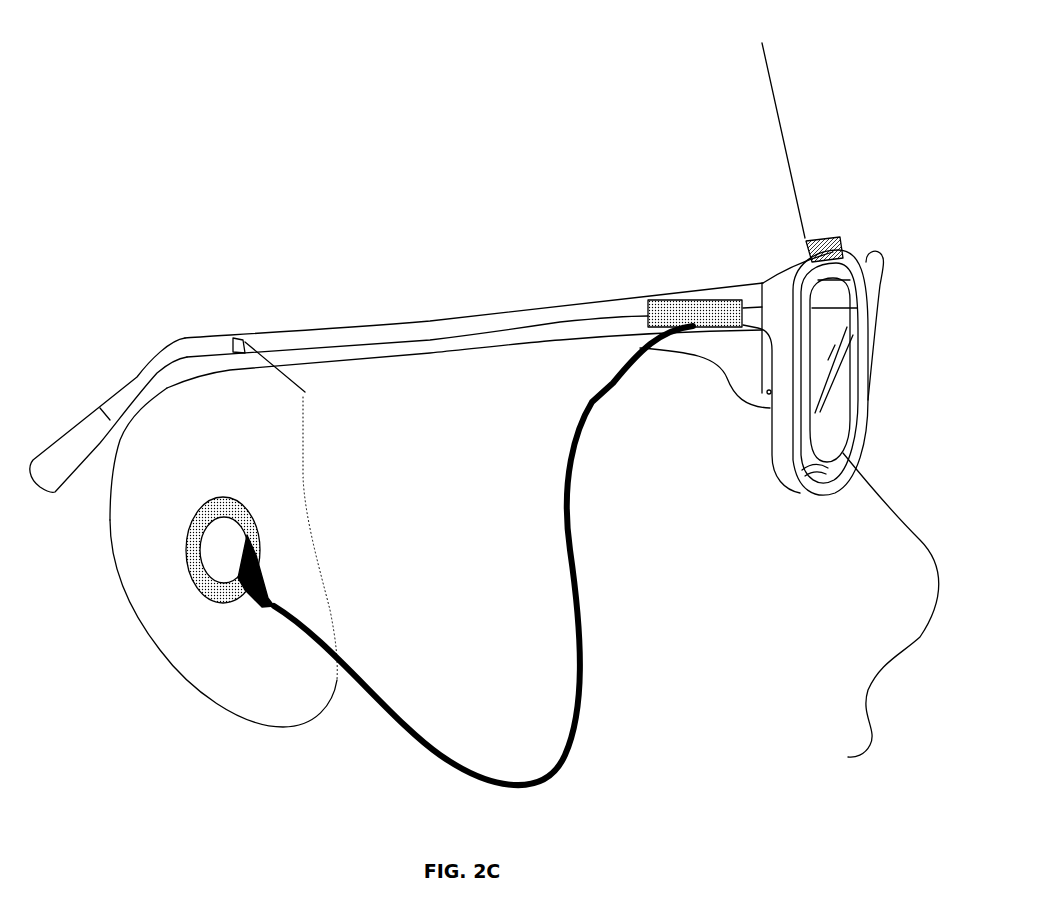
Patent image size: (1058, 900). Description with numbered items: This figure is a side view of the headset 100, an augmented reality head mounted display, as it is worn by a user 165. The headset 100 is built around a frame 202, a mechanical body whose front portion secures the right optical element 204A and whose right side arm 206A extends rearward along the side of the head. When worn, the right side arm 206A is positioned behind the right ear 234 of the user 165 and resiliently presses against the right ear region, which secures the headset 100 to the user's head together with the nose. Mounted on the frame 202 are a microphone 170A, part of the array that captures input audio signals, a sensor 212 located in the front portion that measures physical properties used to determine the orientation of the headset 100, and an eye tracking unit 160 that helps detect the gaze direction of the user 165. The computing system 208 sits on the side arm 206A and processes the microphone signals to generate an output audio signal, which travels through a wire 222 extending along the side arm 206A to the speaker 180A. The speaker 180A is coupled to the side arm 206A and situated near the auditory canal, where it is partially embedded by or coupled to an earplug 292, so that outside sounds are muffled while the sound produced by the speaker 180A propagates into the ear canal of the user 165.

The headset 100 is at (604, 281).
The user 165 is at (757, 100).
The microphone 170A is at (823, 233).
The computing system 208 is at (700, 299).
The wire 222 is at (428, 336).
The right ear 234 is at (274, 460).
The right side arm 206A is at (70, 462).
The speaker 180A is at (217, 578).
The earplug 292 is at (220, 548).
The sensor 212 is at (753, 402).
The right optical element 204A is at (808, 420).
The frame 202 is at (853, 387).
The eye tracking unit 160 is at (811, 470).